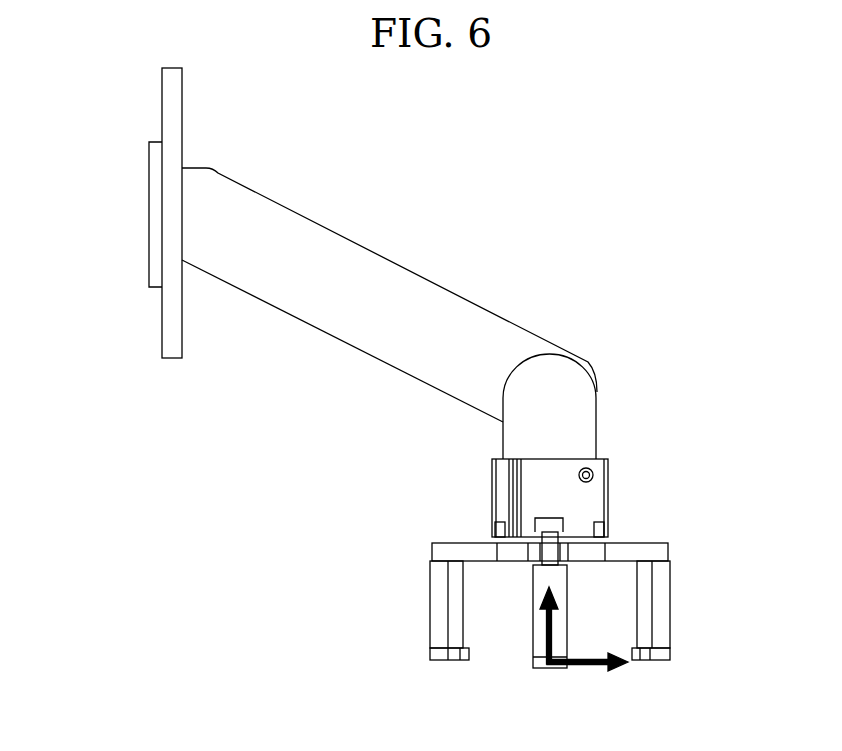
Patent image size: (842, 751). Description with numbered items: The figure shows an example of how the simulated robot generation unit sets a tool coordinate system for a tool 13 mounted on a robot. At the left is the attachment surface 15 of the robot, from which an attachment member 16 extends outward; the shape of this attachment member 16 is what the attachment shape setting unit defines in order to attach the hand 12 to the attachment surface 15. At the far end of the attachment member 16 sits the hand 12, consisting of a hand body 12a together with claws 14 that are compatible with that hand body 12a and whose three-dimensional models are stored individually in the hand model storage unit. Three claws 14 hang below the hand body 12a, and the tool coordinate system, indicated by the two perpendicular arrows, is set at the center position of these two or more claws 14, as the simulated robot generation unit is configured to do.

The hand 12 is at (612, 472).
The hand body 12a is at (608, 478).
The tool 13 is at (552, 166).
The claw 14 is at (430, 630).
The attachment surface 15 is at (162, 107).
The attachment member 16 is at (377, 257).